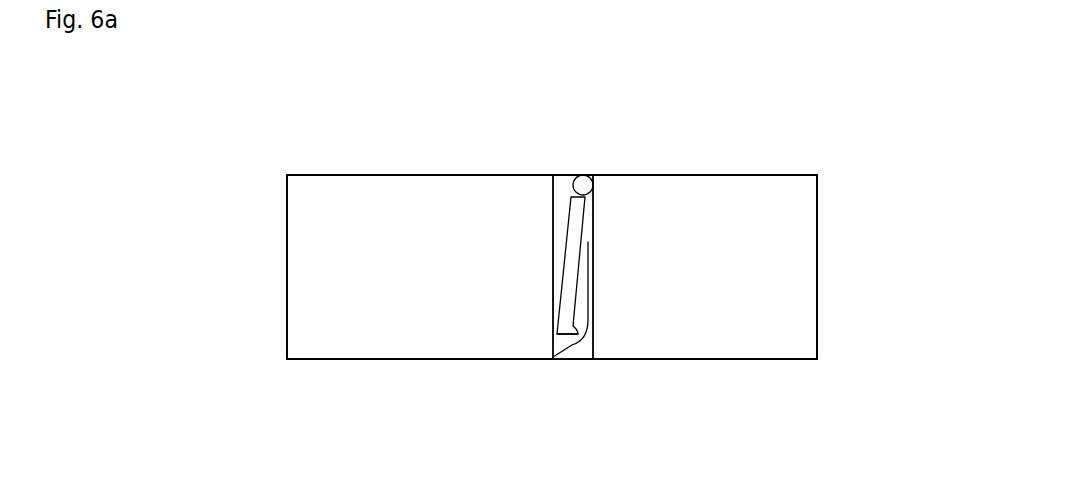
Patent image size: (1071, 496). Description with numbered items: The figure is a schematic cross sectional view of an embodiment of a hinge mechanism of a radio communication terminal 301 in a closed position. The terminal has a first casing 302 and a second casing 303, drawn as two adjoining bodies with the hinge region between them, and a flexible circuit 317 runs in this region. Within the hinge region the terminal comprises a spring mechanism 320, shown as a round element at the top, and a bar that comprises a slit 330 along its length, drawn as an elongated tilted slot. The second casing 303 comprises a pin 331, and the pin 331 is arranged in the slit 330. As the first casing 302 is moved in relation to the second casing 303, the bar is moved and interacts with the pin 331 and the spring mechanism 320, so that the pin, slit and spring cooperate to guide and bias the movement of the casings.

The radio communication terminal 301 is at (775, 153).
The first casing 302 is at (303, 258).
The second casing 303 is at (745, 338).
The flexible circuit 317 is at (580, 352).
The spring mechanism 320 is at (590, 172).
The slit 330 is at (559, 330).
The pin 331 is at (580, 217).